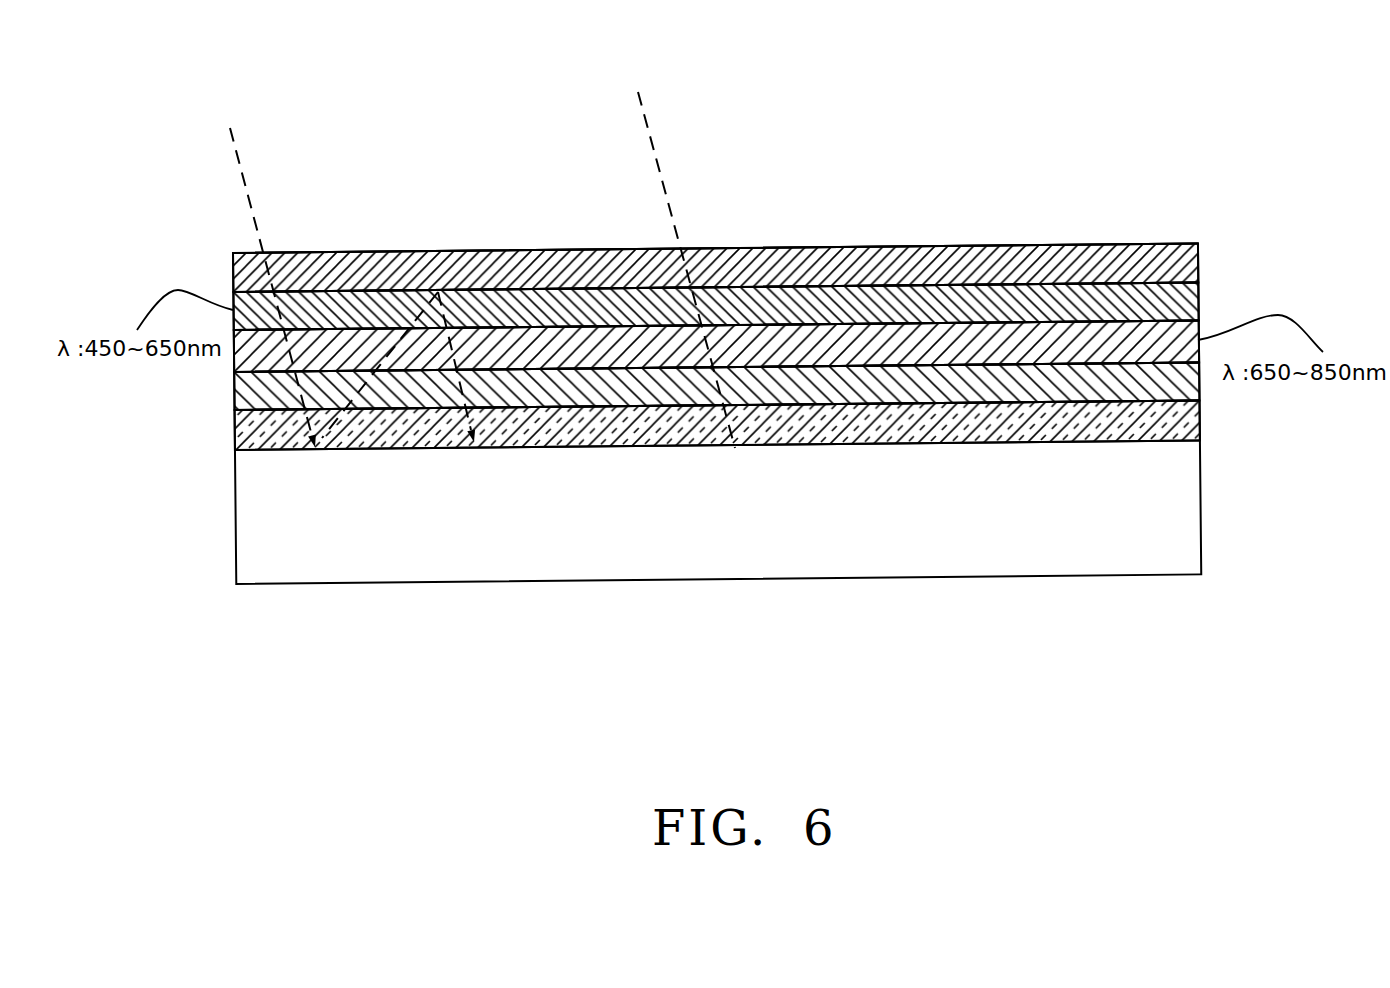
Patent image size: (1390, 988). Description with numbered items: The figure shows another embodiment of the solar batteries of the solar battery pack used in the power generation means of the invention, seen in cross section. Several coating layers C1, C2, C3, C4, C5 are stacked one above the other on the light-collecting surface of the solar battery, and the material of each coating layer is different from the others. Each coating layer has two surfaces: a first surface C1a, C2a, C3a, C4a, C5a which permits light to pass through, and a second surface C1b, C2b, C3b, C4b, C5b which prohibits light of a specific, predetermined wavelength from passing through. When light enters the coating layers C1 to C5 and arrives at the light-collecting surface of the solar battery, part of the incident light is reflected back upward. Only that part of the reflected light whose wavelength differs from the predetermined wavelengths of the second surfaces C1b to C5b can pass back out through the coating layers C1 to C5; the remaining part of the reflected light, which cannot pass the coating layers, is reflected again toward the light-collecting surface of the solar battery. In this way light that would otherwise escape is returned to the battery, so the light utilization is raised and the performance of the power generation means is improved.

The coating layer C1 is at (440, 290).
The coating layer C2 is at (505, 320).
The coating layer C3 is at (573, 352).
The coating layer C4 is at (625, 395).
The coating layer C5 is at (683, 440).
The first surface C1a is at (1141, 283).
The first surface C2a is at (1083, 322).
The first surface C3a is at (1026, 365).
The first surface C4a is at (943, 407).
The first surface C5a is at (849, 437).
The second surface C1b is at (1144, 283).
The second surface C2b is at (1067, 322).
The second surface C3b is at (1006, 365).
The second surface C4b is at (943, 405).
The second surface C5b is at (877, 438).